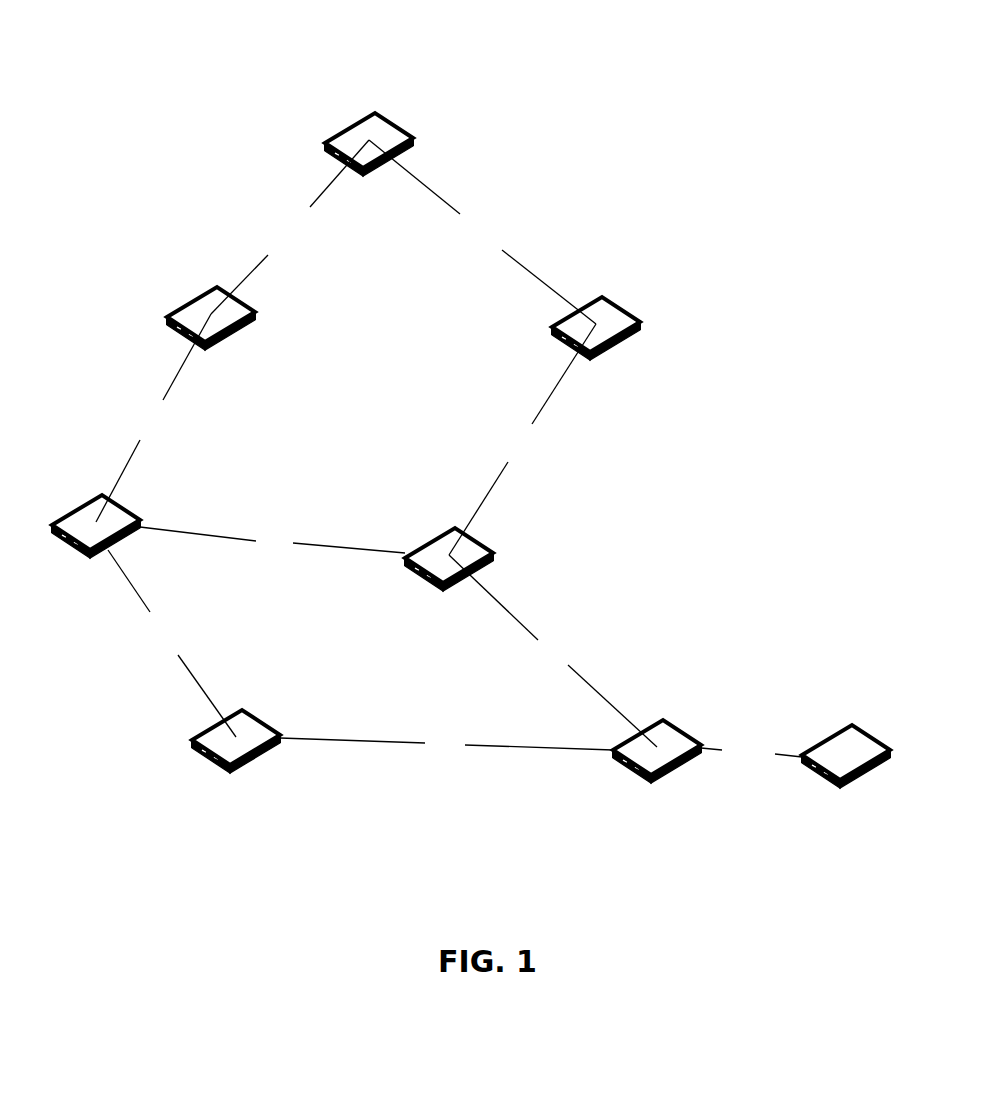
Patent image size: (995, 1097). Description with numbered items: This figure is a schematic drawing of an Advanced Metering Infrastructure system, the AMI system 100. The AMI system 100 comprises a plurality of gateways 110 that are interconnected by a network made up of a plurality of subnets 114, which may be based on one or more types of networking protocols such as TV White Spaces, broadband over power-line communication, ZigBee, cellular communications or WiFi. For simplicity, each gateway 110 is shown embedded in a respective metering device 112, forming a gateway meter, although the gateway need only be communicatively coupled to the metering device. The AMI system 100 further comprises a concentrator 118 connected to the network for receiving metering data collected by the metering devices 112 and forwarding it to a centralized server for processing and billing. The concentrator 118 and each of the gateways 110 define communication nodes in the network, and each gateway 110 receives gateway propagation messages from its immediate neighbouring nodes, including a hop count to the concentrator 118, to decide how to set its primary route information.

The AMI system 100 is at (534, 67).
The gateway 110 is at (208, 312).
The metering device 112 is at (235, 322).
The subnet 114 is at (270, 208).
The concentrator 118 is at (372, 112).